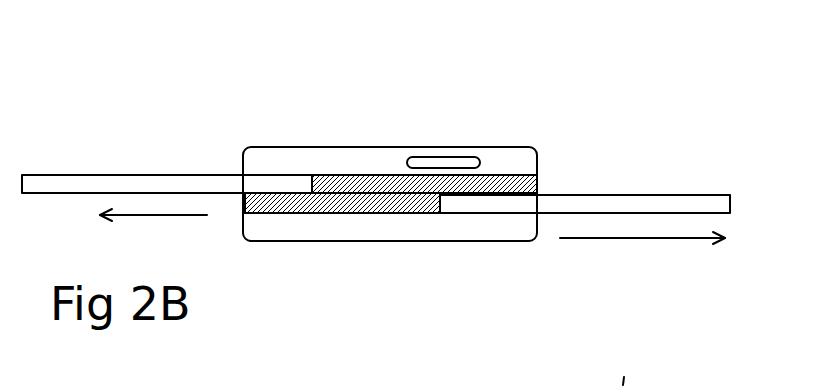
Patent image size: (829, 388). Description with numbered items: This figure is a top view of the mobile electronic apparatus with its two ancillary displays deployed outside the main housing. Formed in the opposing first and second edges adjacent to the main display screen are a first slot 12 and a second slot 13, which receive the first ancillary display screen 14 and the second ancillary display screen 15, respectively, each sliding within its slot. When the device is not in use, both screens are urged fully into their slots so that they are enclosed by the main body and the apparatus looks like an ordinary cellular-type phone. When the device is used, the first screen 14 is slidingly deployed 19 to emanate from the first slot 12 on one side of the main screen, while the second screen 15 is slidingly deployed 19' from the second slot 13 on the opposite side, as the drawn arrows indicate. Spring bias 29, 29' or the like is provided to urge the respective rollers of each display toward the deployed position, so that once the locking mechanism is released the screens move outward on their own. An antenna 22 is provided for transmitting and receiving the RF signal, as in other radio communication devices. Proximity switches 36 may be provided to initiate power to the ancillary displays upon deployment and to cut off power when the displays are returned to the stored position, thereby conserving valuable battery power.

The first slot 12 is at (330, 175).
The second slot 13 is at (398, 213).
The first ancillary display screen 14 is at (127, 176).
The second ancillary display screen 15 is at (617, 197).
The sliding deployment of first screen 19 is at (153, 241).
The sliding deployment of second screen 19' is at (642, 278).
The antenna 22 is at (447, 157).
The spring bias 29 is at (424, 104).
The spring bias 29' is at (342, 271).
The proximity switches 36 is at (285, 225).